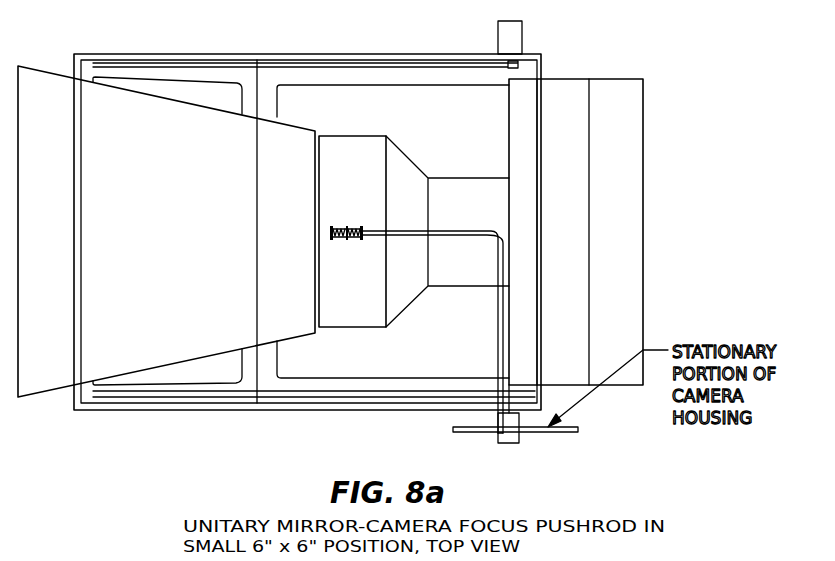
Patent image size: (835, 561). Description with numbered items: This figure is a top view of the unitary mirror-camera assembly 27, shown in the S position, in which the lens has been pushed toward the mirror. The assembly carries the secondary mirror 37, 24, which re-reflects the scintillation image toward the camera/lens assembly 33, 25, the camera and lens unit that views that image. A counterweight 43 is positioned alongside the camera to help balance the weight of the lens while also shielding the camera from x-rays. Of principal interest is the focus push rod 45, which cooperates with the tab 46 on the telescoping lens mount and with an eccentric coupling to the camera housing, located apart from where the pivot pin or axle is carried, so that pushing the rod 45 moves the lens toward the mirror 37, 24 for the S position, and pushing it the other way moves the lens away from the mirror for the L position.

The unitary mirror-camera assembly 27 is at (344, 32).
The secondary mirror 37 is at (166, 266).
The secondary mirror 24 is at (50, 357).
The camera/lens assembly 33 is at (420, 213).
The camera lens 25 is at (520, 153).
The counterweight 43 is at (618, 202).
The focus push rod 45 is at (478, 231).
The tab 46 is at (345, 237).